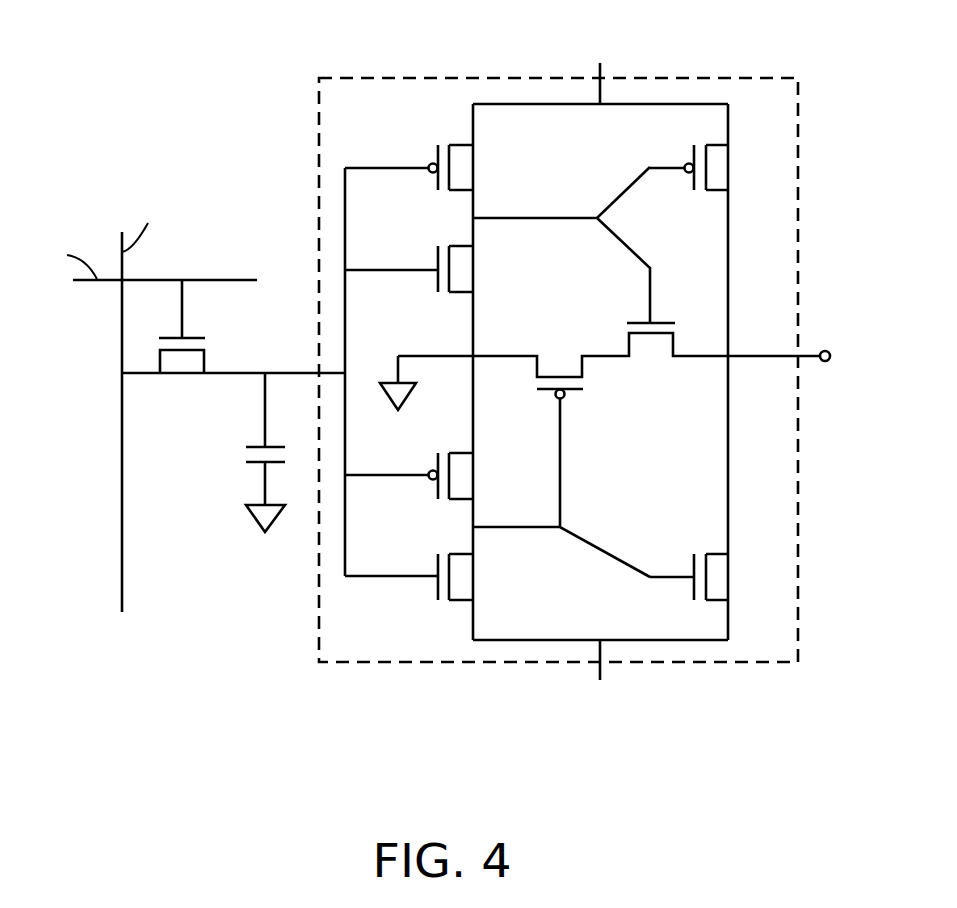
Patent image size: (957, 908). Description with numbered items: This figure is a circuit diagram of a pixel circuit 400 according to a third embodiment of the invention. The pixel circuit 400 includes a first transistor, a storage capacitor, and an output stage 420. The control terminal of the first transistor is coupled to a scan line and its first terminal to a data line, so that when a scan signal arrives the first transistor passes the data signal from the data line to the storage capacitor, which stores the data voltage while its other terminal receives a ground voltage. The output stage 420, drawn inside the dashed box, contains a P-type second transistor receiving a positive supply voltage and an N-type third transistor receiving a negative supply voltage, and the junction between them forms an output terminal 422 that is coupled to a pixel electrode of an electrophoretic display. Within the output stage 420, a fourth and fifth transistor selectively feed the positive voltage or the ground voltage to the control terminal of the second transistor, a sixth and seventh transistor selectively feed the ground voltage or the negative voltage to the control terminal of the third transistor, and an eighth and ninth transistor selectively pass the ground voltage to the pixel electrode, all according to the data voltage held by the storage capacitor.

The pixel circuit 400 is at (860, 770).
The output stage 420 is at (727, 75).
The output terminal 422 is at (829, 351).